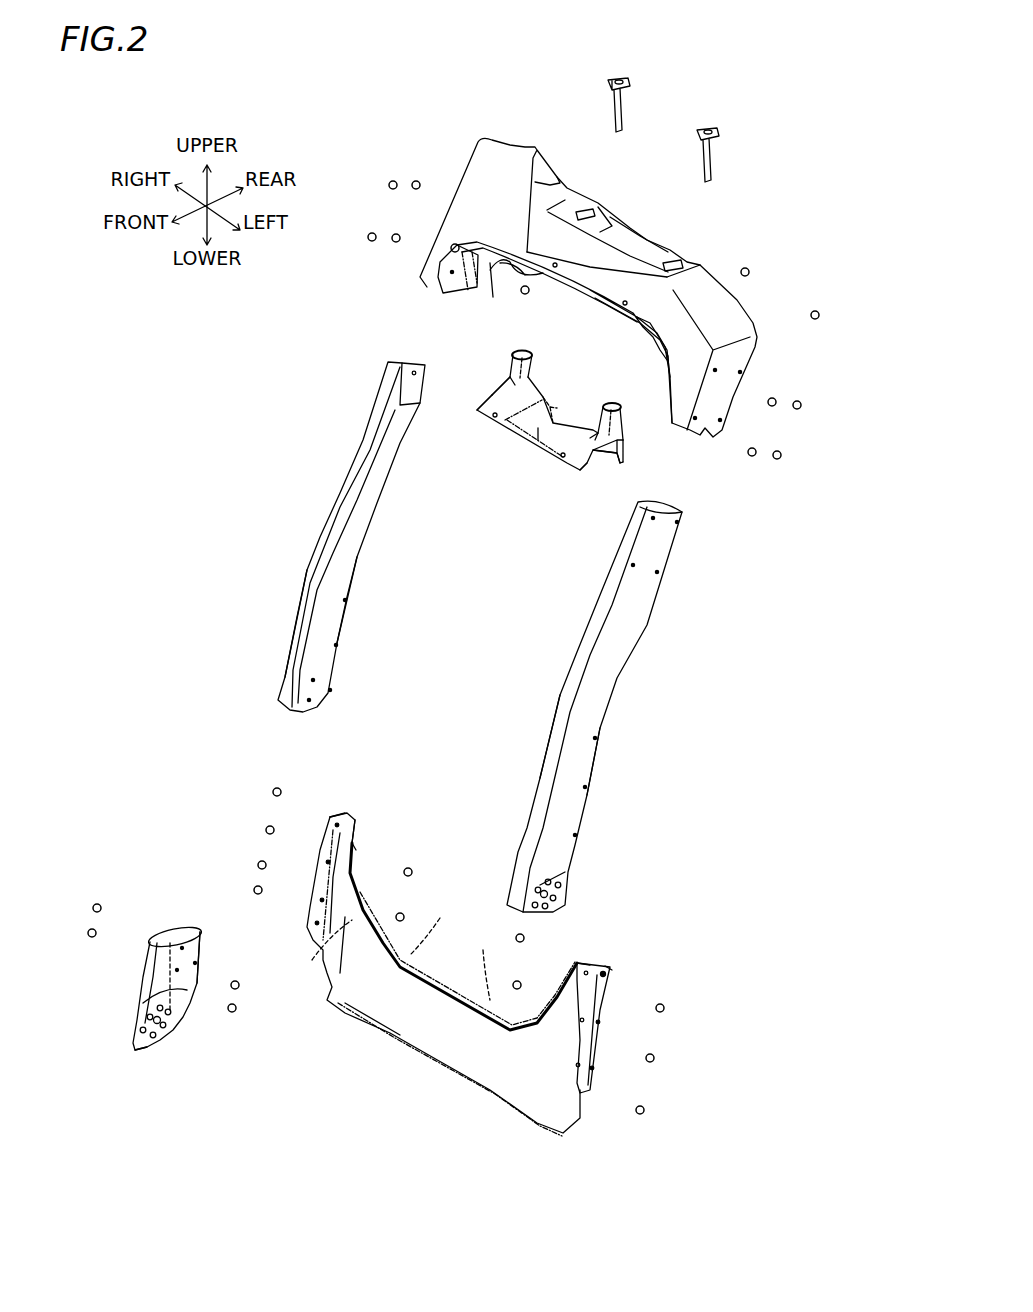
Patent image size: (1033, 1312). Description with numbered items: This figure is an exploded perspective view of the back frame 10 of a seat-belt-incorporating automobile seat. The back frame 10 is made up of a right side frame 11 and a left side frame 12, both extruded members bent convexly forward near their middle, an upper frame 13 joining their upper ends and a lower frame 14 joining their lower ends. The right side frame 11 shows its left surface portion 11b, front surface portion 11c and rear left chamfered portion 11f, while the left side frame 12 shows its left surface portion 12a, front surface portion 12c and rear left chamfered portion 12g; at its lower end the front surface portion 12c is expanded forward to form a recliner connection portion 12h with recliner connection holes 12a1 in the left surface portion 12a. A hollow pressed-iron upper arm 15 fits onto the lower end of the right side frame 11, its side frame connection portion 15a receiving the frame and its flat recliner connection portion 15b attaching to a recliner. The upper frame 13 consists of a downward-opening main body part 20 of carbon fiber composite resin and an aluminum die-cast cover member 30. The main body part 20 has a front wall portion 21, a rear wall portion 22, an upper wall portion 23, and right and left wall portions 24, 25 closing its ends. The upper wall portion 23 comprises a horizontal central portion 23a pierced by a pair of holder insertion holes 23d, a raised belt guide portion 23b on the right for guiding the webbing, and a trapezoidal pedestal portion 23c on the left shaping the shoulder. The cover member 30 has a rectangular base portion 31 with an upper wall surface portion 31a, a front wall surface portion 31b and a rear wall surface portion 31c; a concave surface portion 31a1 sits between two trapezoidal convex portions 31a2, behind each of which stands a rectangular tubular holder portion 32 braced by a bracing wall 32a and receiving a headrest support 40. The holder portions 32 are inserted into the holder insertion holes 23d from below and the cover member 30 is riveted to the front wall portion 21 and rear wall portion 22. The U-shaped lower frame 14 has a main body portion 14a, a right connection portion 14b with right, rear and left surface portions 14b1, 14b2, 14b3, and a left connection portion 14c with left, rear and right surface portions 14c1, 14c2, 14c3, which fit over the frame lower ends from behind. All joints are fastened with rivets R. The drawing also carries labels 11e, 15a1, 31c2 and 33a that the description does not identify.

The back frame 10 is at (754, 106).
The right side frame 11 is at (316, 537).
The left surface portion 11b is at (328, 620).
The front surface portion 11c is at (312, 563).
The bent portion 11e is at (320, 593).
The rear left chamfered portion 11f is at (347, 583).
The left side frame 12 is at (602, 706).
The left surface portion 12a is at (603, 665).
The recliner connection holes 12a1 is at (558, 885).
The front surface portion 12c is at (560, 698).
The rear left chamfered portion 12g is at (630, 625).
The recliner connection portion 12h is at (565, 865).
The upper frame 13 is at (645, 230).
The lower frame 14 is at (498, 938).
The main body portion 14a is at (388, 1040).
The right connection portion 14b is at (325, 830).
The right surface portion 14b1 is at (340, 815).
The rear surface portion 14b2 is at (362, 820).
The left surface portion 14b3 is at (355, 843).
The left connection portion 14c is at (600, 1000).
The left surface portion 14c1 is at (610, 975).
The rear surface portion 14c2 is at (605, 965).
The right surface portion 14c3 is at (585, 965).
The upper arm 15 is at (177, 999).
The side frame connection portion 15a is at (195, 930).
The bracket holes 15a1 is at (175, 1012).
The recliner connection portion 15b is at (147, 1050).
The main body part 20 is at (599, 256).
The front wall portion 21 is at (600, 283).
The rear wall portion 22 is at (490, 262).
The upper wall portion 23 is at (616, 256).
The central portion 23a is at (632, 240).
The belt guide portion 23b is at (503, 140).
The pedestal portion 23c is at (713, 308).
The holder insertion holes 23d is at (585, 208).
The right wall portion 24 is at (438, 282).
The left wall portion 25 is at (738, 360).
The cover member 30 is at (559, 432).
The base portion 31 is at (559, 451).
The upper wall surface portion 31a is at (548, 430).
The concave surface portion 31a1 is at (538, 440).
The convex portions 31a2 is at (478, 385).
The front wall surface portion 31b is at (570, 465).
The rear wall surface portion 31c is at (622, 452).
The side flange edge 31c2 is at (590, 460).
The holder portions 32 is at (515, 353).
The bracing wall 32a is at (587, 428).
The weld portion 33a is at (500, 393).
The headrest support 40 is at (625, 110).
The rivets R is at (392, 238).